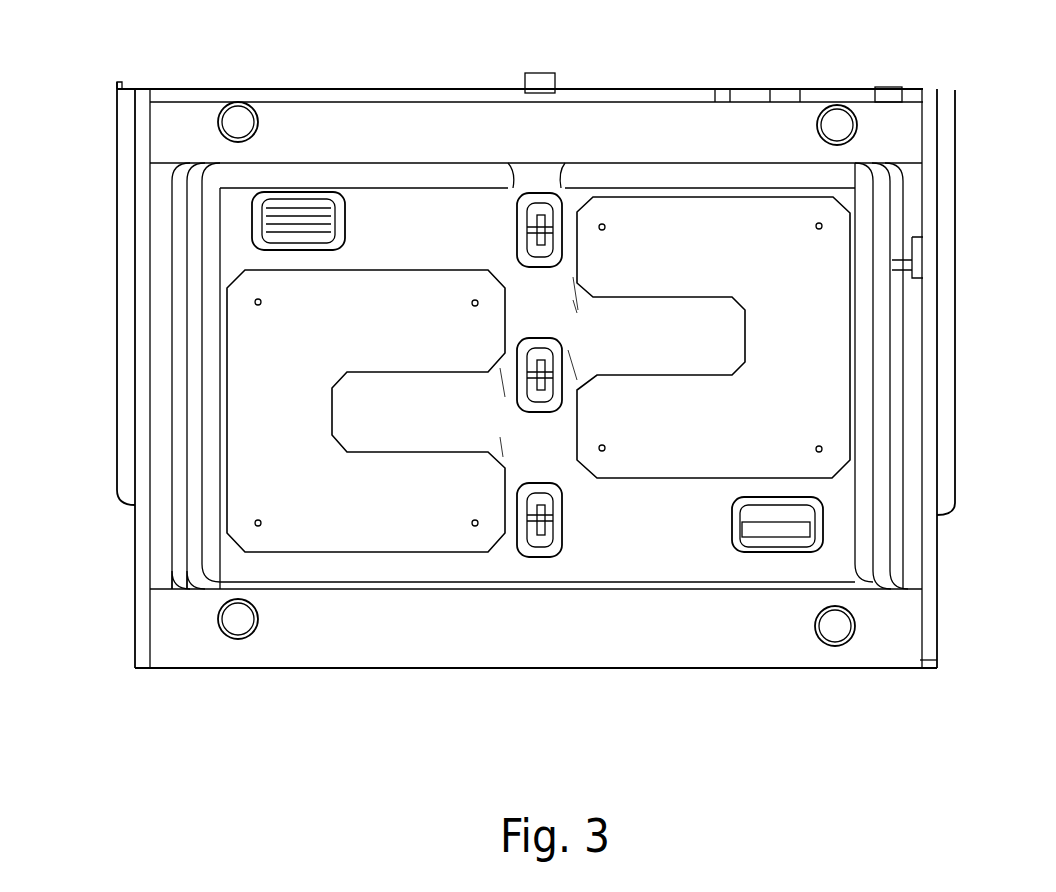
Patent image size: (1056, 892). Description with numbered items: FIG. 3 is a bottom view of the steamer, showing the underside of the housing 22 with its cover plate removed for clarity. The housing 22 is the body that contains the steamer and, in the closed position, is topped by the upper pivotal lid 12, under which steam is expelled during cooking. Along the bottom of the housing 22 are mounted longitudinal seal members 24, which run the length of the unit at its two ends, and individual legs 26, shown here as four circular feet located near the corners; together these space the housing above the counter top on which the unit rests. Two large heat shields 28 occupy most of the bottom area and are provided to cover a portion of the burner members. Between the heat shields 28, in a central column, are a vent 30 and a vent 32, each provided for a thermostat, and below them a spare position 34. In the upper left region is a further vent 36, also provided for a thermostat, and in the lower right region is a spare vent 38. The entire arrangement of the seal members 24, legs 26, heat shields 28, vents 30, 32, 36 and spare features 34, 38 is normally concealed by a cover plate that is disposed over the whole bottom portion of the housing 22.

The upper pivotal lid 12 is at (948, 387).
The housing 22 is at (742, 588).
The longitudinal seal members 24 is at (902, 120).
The legs 26 is at (257, 103).
The heat shields 28 is at (263, 389).
The vent 30 is at (553, 240).
The vent 32 is at (557, 357).
The spare position 34 is at (557, 517).
The vent 36 is at (345, 218).
The spare vent 38 is at (732, 510).